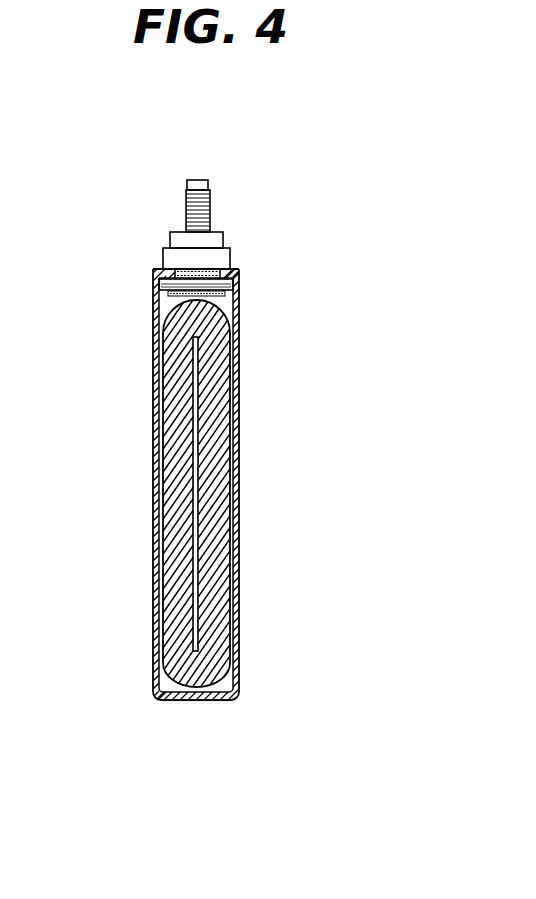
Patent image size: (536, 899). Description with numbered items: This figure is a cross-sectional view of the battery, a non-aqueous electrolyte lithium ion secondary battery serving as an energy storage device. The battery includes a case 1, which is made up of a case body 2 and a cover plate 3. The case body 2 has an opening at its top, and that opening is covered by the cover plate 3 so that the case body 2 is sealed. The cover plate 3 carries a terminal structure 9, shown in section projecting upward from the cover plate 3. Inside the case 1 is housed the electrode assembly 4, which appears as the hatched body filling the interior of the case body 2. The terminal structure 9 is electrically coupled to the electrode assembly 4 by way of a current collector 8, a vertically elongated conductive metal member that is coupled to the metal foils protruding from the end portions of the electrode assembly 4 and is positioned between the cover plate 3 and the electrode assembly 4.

The case 1 is at (330, 281).
The case body 2 is at (240, 373).
The cover plate 3 is at (240, 268).
The electrode assembly 4 is at (200, 668).
The current collector 8 is at (175, 300).
The terminal structure 9 is at (227, 207).